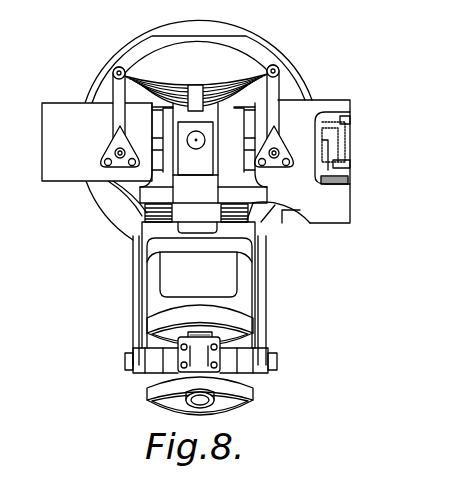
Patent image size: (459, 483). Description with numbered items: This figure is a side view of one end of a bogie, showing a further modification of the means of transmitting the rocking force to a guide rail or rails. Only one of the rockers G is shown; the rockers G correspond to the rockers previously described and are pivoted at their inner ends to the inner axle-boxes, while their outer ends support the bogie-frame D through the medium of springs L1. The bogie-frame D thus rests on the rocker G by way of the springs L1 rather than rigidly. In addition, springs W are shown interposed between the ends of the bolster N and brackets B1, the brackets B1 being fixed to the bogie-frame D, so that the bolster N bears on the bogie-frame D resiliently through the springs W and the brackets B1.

The bolster N is at (348, 143).
The bogie-frame D is at (301, 161).
The springs W is at (335, 184).
The brackets B1 is at (302, 221).
The springs L1 is at (223, 213).
The rockers G is at (260, 297).